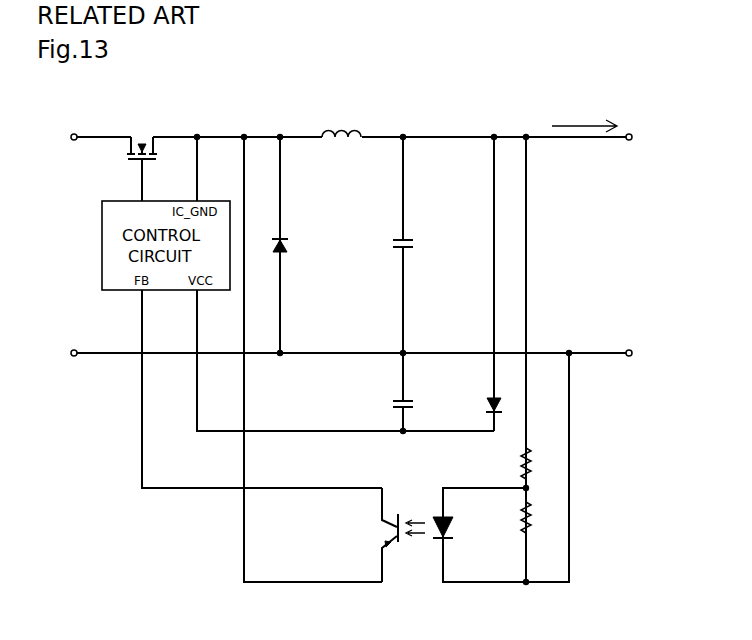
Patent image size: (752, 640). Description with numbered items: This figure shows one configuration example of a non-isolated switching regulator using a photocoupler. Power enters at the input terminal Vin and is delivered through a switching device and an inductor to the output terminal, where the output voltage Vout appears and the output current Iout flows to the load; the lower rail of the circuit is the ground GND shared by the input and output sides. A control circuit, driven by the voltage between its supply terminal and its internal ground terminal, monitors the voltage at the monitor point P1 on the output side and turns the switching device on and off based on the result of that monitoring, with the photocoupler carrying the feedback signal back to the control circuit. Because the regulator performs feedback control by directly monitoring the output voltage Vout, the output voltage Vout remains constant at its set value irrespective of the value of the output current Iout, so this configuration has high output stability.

The monitor point P1 is at (531, 142).
The input voltage terminal Vin is at (83, 137).
The output voltage Vout is at (600, 138).
The ground terminal GND is at (351, 353).
The output current Iout is at (584, 119).